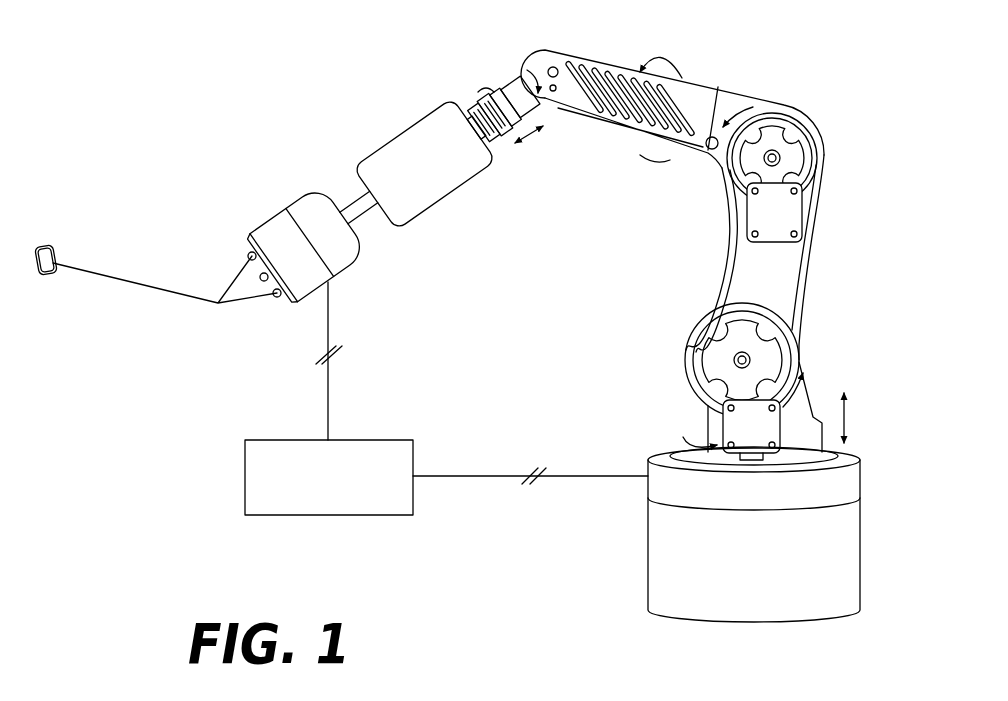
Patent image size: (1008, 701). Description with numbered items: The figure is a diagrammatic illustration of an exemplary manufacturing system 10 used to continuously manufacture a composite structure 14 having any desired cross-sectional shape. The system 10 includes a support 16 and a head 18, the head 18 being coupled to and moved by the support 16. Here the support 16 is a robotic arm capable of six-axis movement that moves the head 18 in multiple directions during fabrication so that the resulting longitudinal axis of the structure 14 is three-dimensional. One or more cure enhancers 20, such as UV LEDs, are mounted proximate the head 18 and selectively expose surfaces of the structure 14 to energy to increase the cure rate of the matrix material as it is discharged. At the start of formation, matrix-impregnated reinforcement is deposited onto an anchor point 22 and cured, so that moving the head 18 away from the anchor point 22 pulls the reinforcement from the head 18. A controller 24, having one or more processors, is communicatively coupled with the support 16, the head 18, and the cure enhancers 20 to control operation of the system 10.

The system 10 is at (123, 66).
The composite structure 14 is at (148, 283).
The support 16 is at (773, 272).
The head 18 is at (340, 258).
The cure enhancer 20 is at (263, 281).
The anchor point 22 is at (52, 273).
The controller 24 is at (339, 488).